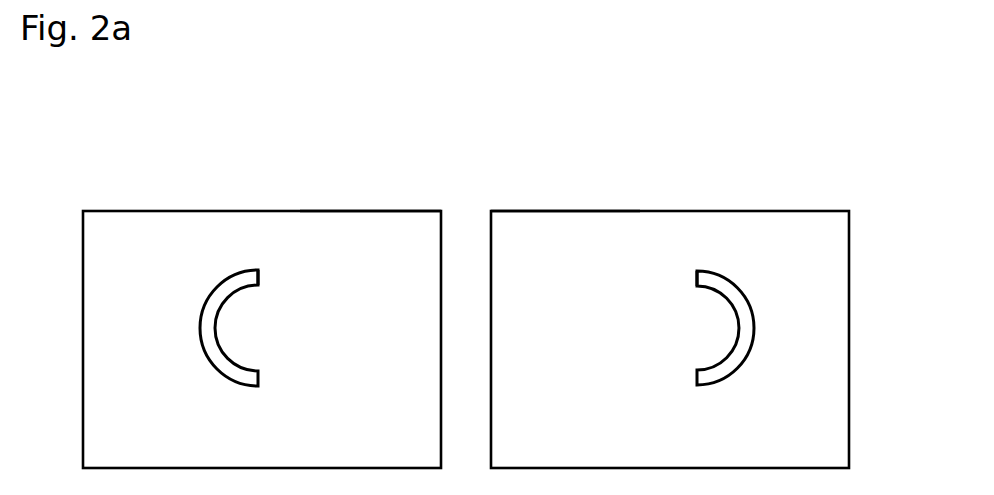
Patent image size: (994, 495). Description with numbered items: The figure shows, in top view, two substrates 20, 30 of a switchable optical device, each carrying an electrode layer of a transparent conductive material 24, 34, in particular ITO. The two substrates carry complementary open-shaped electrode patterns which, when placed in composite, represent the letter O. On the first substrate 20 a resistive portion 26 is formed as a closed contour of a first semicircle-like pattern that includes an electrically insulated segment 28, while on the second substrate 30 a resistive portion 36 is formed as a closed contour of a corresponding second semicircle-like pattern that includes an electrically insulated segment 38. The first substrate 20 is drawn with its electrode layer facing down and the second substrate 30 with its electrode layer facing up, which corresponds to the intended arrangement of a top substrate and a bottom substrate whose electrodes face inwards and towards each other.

The first substrate 20 is at (136, 194).
The transparent conductive material 24 is at (397, 233).
The resistive portion 26 is at (222, 268).
The electrically insulated segment 28 is at (240, 278).
The second substrate 30 is at (794, 191).
The transparent conductive material 34 is at (548, 235).
The resistive portion 36 is at (713, 263).
The electrically insulated segment 38 is at (703, 275).